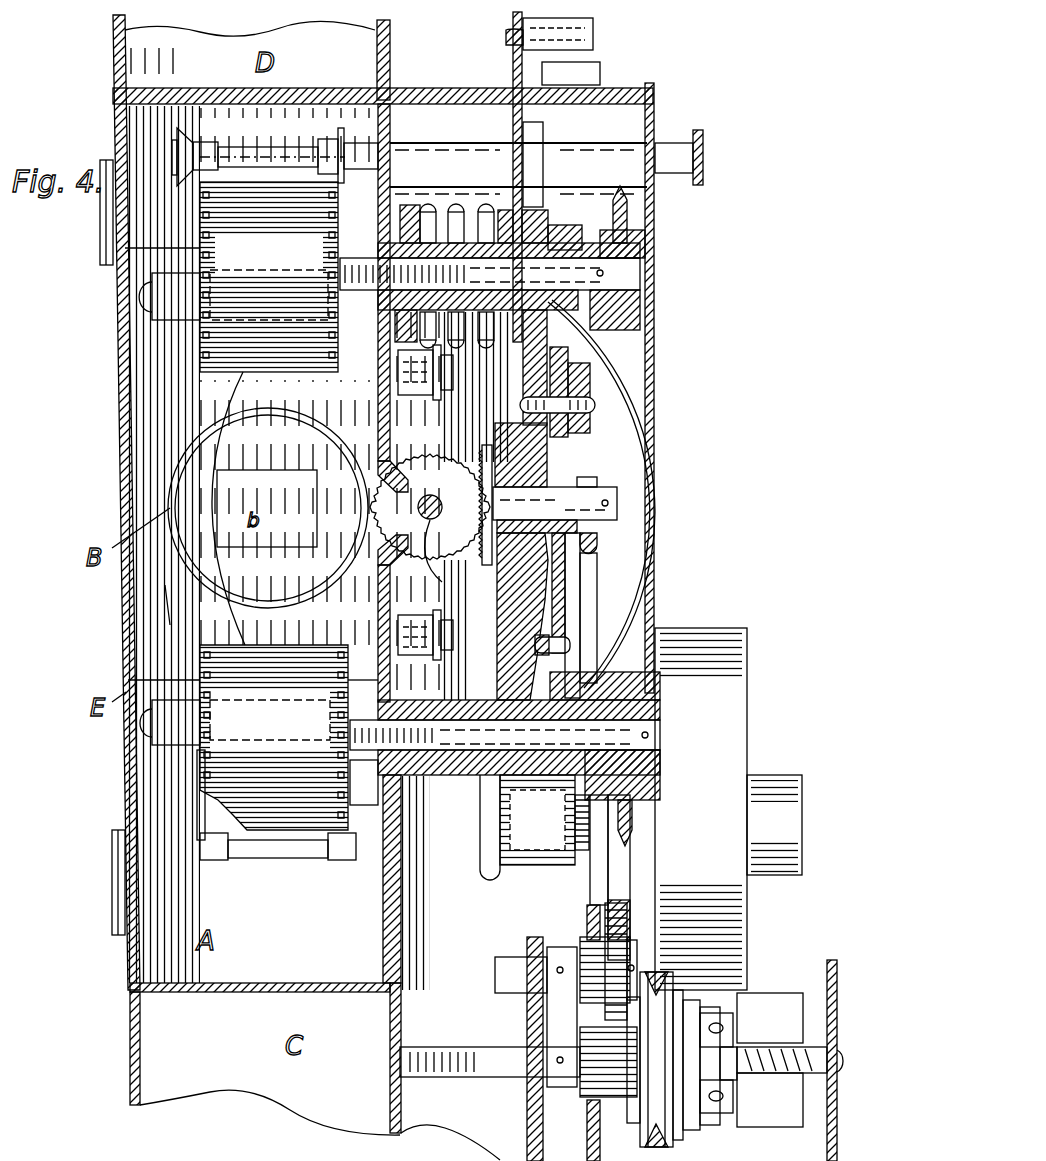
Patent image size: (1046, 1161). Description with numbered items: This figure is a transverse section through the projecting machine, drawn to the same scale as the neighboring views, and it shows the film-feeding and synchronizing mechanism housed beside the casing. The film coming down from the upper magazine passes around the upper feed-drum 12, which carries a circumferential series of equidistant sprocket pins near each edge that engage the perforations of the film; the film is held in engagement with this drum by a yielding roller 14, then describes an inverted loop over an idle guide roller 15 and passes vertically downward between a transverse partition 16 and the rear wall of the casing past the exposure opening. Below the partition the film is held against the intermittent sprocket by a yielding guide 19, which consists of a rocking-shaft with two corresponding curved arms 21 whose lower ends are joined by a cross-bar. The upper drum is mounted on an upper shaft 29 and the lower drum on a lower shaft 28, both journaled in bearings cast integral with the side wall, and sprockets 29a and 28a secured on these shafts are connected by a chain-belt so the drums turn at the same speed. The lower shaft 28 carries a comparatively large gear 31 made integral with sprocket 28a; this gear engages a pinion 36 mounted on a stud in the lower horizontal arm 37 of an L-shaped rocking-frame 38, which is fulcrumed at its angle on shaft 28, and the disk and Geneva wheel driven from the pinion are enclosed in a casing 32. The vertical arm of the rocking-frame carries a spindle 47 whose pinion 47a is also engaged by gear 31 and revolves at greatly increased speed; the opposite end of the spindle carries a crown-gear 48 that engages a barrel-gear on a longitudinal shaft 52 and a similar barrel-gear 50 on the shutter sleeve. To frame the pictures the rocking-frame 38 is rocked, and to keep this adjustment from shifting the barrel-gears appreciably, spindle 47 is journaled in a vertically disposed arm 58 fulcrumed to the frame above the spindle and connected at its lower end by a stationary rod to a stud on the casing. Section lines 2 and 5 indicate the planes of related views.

The vertical shaft / section line 2 is at (532, 115).
The section line 5 is at (100, 800).
The upper feed-drum 12 is at (269, 277).
The yielding roller 14 is at (169, 296).
The idle guide roller 15 is at (264, 148).
The transverse partition 16 is at (154, 605).
The yielding guide 19 is at (248, 856).
The curved arms 21 is at (200, 816).
The lower drum-shaft 28 is at (505, 736).
The sprocket 28a is at (632, 815).
The upper drum-shaft 29 is at (358, 262).
The sprocket 29a is at (628, 222).
The large gear 31 is at (580, 902).
The casing 32 is at (648, 885).
The pinion 36 is at (592, 832).
The horizontal arm 37 is at (492, 880).
The L-shaped rocking-frame 38 is at (432, 662).
The spindle 47 is at (620, 503).
The pinion 47a is at (598, 527).
The crown-gear 48 is at (484, 452).
The barrel-gear 50 is at (430, 458).
The longitudinal shaft 52 is at (441, 558).
The vertically disposed arm 58 is at (565, 580).